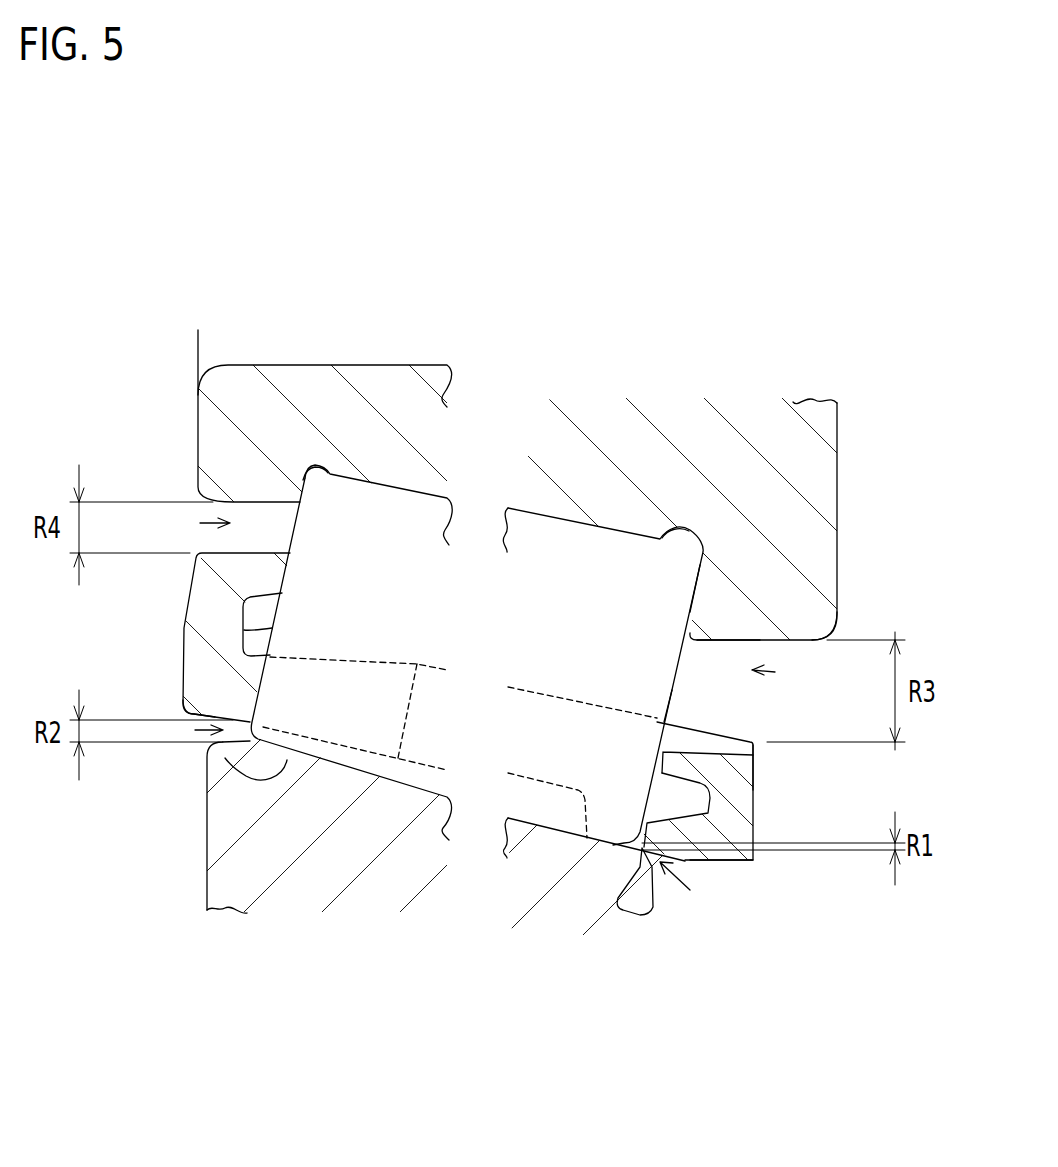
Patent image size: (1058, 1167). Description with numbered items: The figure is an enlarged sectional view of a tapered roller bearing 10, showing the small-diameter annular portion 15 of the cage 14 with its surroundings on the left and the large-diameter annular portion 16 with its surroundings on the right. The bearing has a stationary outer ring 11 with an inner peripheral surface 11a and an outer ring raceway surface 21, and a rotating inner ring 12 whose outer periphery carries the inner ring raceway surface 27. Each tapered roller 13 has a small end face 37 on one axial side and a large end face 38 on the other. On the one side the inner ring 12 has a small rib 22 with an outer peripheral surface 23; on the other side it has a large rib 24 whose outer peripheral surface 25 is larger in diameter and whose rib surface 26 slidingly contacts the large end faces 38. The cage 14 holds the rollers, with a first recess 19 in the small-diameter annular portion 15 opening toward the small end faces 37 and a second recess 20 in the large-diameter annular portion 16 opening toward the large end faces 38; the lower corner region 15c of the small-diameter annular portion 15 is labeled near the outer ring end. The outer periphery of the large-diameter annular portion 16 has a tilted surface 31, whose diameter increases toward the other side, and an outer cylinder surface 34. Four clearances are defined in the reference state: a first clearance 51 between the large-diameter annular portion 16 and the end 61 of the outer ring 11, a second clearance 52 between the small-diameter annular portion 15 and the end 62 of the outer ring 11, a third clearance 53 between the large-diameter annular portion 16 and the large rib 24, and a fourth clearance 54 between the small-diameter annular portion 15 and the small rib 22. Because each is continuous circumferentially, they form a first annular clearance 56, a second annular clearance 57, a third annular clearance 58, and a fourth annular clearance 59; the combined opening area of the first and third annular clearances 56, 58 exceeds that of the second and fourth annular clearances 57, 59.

The tapered roller bearing 10 is at (506, 650).
The outer ring 11 is at (207, 862).
The inner peripheral surface of the outer ring 11a is at (710, 654).
The inner ring 12 is at (837, 505).
The tapered roller 13 is at (548, 517).
The cage 14 is at (767, 772).
The small-diameter annular portion 15 is at (205, 652).
The lower corner of engaging block 15c is at (200, 714).
The large-diameter annular portion 16 is at (733, 805).
The first recess 19 is at (272, 628).
The second recess 20 is at (680, 796).
The outer ring raceway surface 21 is at (567, 831).
The small rib 22 is at (262, 490).
The outer peripheral surface of the small rib 23 is at (265, 502).
The large rib 24 is at (773, 607).
The outer peripheral surface of the large rib 25 is at (730, 643).
The rib surface 26 is at (687, 590).
The inner ring raceway surface 27 is at (605, 530).
The tilted surface 31 is at (629, 911).
The outer cylinder surface 34 is at (723, 865).
The small end face 37 is at (247, 600).
The large end face 38 is at (663, 695).
The first clearance 51 is at (706, 923).
The second clearance 52 is at (169, 786).
The third clearance 53 is at (799, 697).
The fourth clearance 54 is at (177, 460).
The first annular clearance 56 is at (690, 890).
The second annular clearance 57 is at (195, 730).
The third annular clearance 58 is at (775, 672).
The fourth annular clearance 59 is at (200, 523).
The end of the outer ring on the other side 61 is at (616, 908).
The end of the outer ring on the one side 62 is at (287, 760).